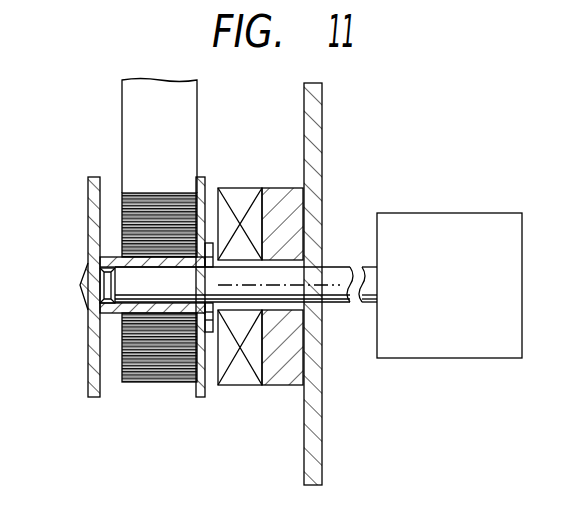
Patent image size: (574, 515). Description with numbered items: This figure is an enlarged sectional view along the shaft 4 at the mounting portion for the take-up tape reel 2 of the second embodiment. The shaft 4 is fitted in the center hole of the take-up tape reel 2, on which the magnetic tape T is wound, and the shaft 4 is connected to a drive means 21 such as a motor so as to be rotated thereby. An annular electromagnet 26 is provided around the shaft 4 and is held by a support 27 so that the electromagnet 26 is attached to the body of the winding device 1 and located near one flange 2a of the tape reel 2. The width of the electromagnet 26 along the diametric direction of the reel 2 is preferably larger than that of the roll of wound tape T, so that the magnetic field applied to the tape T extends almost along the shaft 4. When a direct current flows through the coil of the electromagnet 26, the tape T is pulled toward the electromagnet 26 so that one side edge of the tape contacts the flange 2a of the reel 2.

The magnetic tape T is at (125, 113).
The take-up tape reel 2 is at (86, 352).
The flange 2a is at (205, 190).
The shaft 4 is at (335, 270).
The drive means 21 is at (472, 213).
The annular electromagnet 26 is at (243, 386).
The support 27 is at (285, 386).
The winding device 1 is at (316, 457).